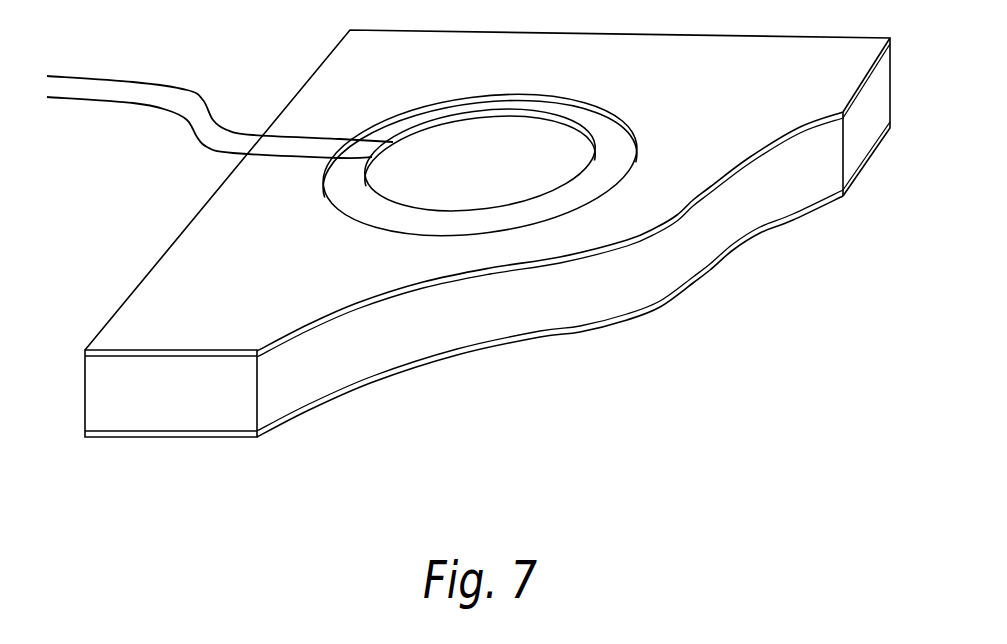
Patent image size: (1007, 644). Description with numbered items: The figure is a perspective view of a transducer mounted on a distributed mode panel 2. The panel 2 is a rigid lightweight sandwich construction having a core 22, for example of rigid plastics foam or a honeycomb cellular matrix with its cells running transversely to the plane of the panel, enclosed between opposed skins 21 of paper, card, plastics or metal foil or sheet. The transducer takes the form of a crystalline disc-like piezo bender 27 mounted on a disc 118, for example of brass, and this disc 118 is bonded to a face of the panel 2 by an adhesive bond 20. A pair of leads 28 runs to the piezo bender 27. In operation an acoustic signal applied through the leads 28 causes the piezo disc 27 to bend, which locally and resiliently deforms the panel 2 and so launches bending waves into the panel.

The panel 2 is at (487, 250).
The adhesive bond 20 is at (620, 187).
The skins 21 is at (423, 283).
The core 22 is at (543, 318).
The piezo bender 27 is at (468, 122).
The leads 28 is at (175, 88).
The disc 118 is at (608, 130).